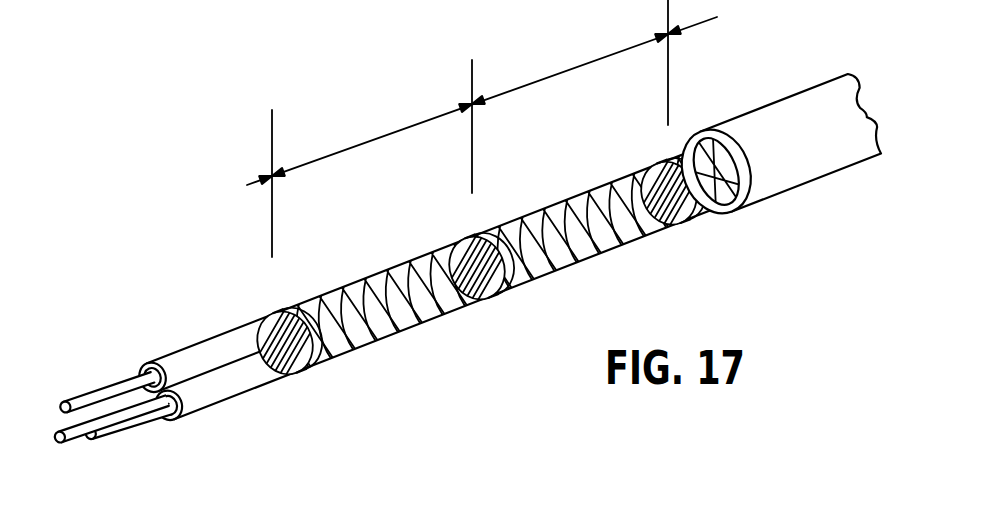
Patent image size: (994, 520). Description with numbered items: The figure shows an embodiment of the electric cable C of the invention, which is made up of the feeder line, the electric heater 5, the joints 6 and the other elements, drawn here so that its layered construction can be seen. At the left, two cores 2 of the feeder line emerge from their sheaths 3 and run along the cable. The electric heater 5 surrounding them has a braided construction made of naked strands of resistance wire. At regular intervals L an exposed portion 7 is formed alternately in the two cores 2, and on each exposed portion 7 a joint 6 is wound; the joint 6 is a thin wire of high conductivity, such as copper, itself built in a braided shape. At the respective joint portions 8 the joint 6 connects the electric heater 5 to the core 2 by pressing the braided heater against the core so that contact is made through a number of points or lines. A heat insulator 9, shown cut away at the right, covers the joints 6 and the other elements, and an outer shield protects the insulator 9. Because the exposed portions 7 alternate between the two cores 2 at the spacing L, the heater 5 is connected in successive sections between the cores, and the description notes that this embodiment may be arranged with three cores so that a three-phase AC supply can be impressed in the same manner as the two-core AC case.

The core 2 is at (77, 443).
The insulating sheaths 3 is at (227, 383).
The electric heater 5 is at (400, 325).
The joint 6 is at (292, 377).
The exposed portion 7 is at (250, 328).
The joint portion 8 is at (272, 317).
The heat insulator 9 is at (807, 184).
The regular interval L is at (482, 128).
The electric cable C is at (638, 137).